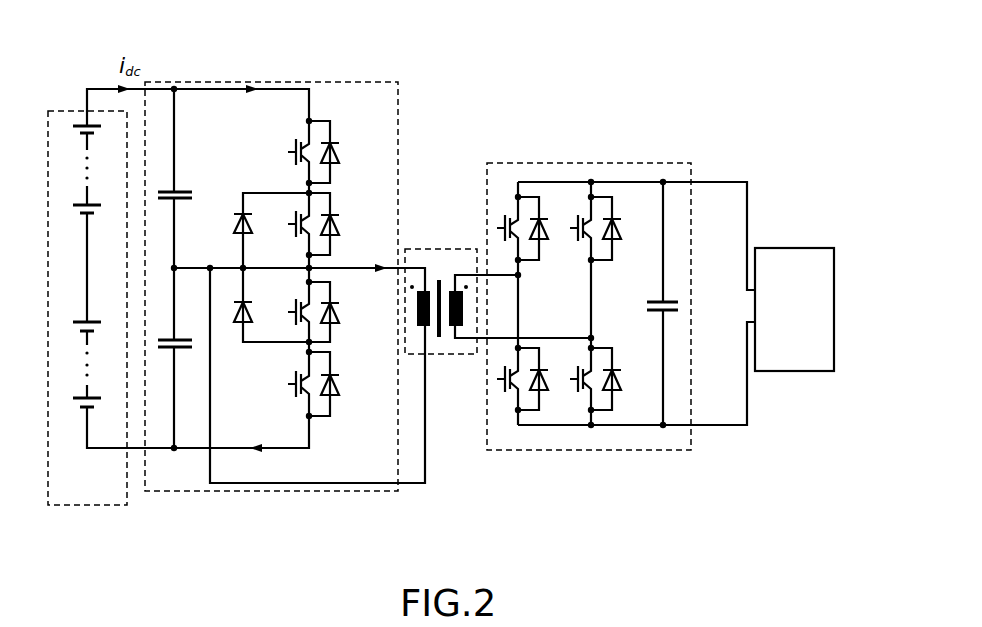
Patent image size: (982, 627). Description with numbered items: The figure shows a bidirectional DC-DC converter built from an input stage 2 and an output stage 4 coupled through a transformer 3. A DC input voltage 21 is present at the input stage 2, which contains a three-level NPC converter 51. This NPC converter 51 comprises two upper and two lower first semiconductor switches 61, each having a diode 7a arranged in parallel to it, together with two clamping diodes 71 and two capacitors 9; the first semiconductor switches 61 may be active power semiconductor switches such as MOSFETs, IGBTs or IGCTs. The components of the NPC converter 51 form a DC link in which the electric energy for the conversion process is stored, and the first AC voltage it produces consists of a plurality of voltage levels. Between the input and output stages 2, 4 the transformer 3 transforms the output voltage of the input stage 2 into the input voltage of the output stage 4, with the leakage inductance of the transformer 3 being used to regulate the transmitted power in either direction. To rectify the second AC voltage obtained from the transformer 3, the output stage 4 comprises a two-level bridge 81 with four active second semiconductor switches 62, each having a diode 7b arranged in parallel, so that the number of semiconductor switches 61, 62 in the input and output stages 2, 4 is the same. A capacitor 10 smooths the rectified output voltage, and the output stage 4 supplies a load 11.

The DC input voltage 21 is at (68, 102).
The input stage 2 is at (291, 247).
The 3-level NPC converter 51 is at (400, 99).
The capacitor 9 is at (174, 268).
The first semiconductor switch 61 is at (291, 206).
The diode 7a is at (340, 268).
The clamping diode 71 is at (237, 206).
The transformer 3 is at (442, 360).
The output stage 4 is at (626, 269).
The 2-level half-bridge 81 is at (647, 163).
The second semiconductor switch 62 is at (577, 204).
The diode 7b is at (583, 303).
The capacitor 10 is at (649, 303).
The load 11 is at (810, 380).